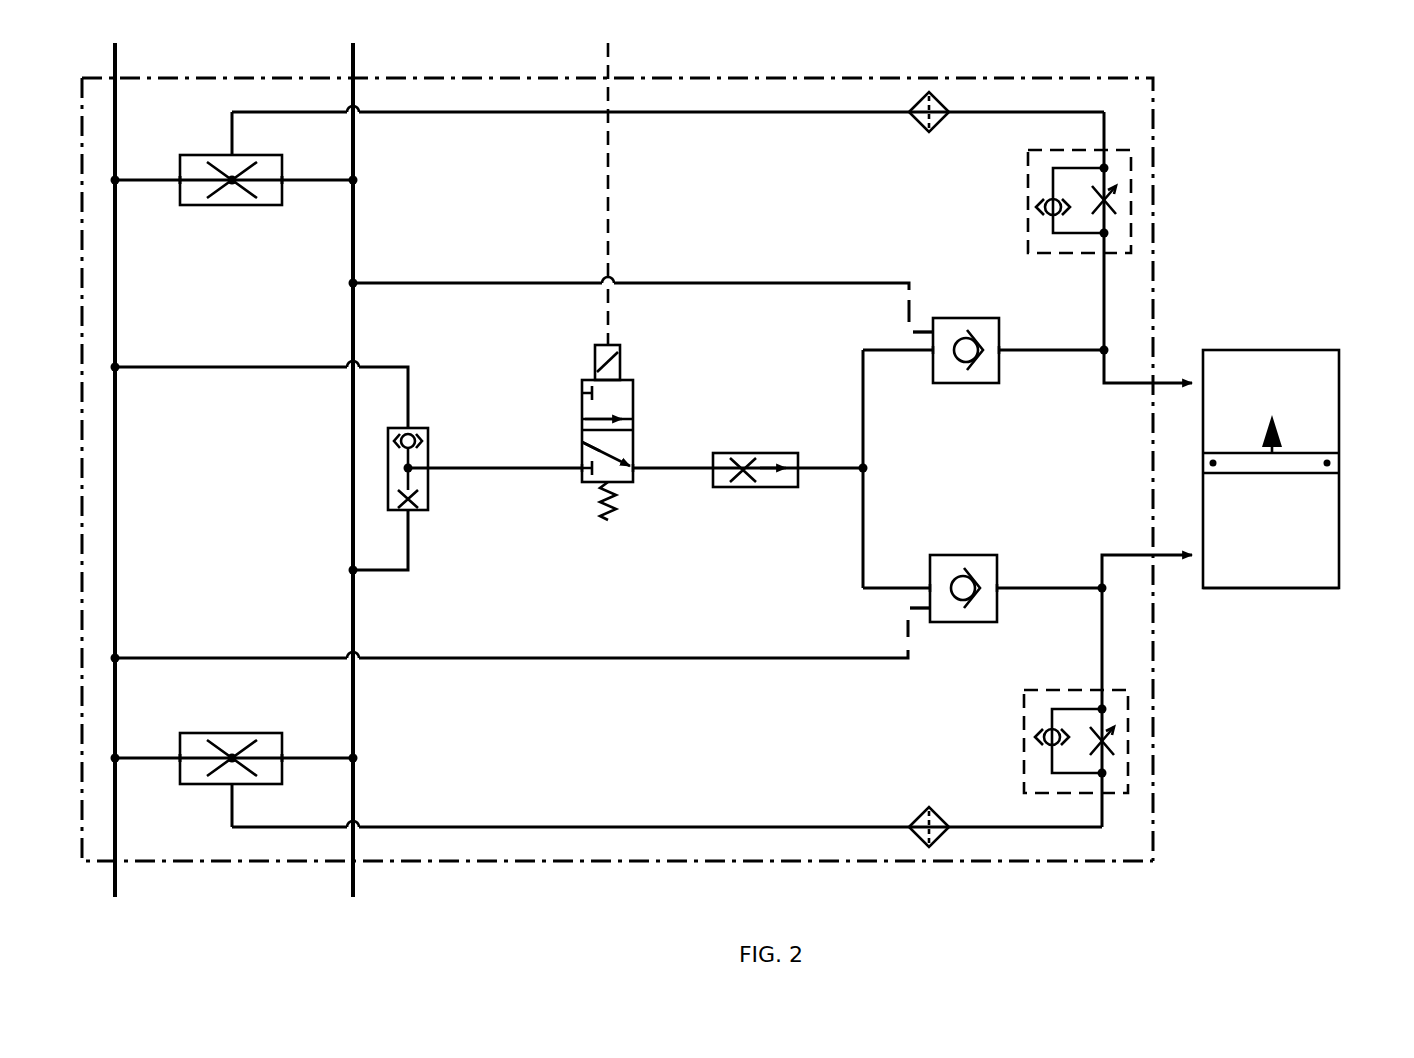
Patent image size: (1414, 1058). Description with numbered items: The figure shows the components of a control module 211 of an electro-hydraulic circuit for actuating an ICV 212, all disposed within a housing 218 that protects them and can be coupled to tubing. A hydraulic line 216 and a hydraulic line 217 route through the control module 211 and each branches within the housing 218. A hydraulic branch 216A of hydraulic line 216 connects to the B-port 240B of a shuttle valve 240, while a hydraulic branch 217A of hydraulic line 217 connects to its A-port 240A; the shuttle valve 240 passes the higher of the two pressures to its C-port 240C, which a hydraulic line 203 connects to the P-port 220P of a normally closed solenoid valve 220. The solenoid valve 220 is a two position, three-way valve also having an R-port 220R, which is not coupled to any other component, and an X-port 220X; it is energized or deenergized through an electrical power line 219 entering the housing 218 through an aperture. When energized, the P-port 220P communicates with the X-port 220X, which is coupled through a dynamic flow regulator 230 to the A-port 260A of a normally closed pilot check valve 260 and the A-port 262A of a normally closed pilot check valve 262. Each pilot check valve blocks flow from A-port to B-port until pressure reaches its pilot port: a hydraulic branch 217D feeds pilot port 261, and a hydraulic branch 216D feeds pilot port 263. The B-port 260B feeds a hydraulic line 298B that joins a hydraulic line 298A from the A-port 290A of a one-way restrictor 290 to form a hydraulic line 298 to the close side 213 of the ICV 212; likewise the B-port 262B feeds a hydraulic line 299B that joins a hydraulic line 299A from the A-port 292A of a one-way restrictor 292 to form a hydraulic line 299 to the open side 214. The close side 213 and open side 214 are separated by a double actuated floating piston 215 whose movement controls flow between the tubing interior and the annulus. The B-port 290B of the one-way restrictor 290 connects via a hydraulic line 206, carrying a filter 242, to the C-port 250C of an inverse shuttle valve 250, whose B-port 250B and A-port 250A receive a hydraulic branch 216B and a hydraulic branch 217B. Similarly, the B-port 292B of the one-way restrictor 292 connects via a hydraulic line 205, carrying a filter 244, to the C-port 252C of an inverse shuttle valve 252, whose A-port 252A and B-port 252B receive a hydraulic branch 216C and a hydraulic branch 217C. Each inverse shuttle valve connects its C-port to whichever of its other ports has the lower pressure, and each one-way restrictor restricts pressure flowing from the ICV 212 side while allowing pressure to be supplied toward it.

The hydraulic line 203 is at (500, 477).
The hydraulic line 205 is at (615, 825).
The hydraulic line 206 is at (512, 118).
The control module 211 is at (1162, 818).
The ICV 212 is at (1283, 340).
The close side 213 is at (1249, 409).
The open side 214 is at (1249, 544).
The double actuated floating piston 215 is at (1308, 462).
The hydraulic line 216 is at (120, 435).
The hydraulic branch 216A is at (220, 352).
The hydraulic branch 216B is at (148, 172).
The hydraulic branch 216C is at (150, 768).
The hydraulic branch 216D is at (610, 650).
The hydraulic line 217 is at (360, 702).
The hydraulic branch 217A is at (392, 578).
The hydraulic branch 217B is at (316, 174).
The hydraulic branch 217C is at (318, 766).
The hydraulic branch 217D is at (466, 274).
The housing 218 is at (1157, 138).
The electrical power line 219 is at (614, 218).
The normally closed solenoid valve 220 is at (640, 398).
The P-port 220P is at (579, 472).
The R-port 220R is at (578, 443).
The X-port 220X is at (638, 467).
The dynamic flow regulator 230 is at (782, 492).
The shuttle valve 240 is at (380, 458).
The A-port 240A is at (403, 515).
The B-port 240B is at (413, 428).
The C-port 240C is at (434, 472).
The filter 242 is at (925, 132).
The filter 244 is at (922, 805).
The inverse shuttle valve 250 is at (228, 208).
The A-port 250A is at (288, 185).
The B-port 250B is at (175, 184).
The C-port 250C is at (228, 152).
The inverse shuttle valve 252 is at (228, 728).
The A-port 252A is at (176, 754).
The B-port 252B is at (288, 754).
The C-port 252C is at (226, 788).
The normally closed pilot check valve 260 is at (953, 392).
The A-port 260A is at (925, 362).
The B-port 260B is at (1003, 360).
The pilot port 261 is at (926, 314).
The normally closed pilot check valve 262 is at (948, 545).
The A-port 262A is at (922, 578).
The B-port 262B is at (1002, 580).
The pilot port 263 is at (925, 626).
The one-way restrictor 290 is at (1020, 178).
The A-port 290A is at (1110, 240).
The B-port 290B is at (1099, 160).
The one-way restrictor 292 is at (1022, 770).
The A-port 292A is at (1108, 700).
The B-port 292B is at (1108, 780).
The hydraulic line 298 is at (1168, 375).
The hydraulic line 298A is at (1085, 278).
The hydraulic line 298B is at (1028, 350).
The hydraulic line 299 is at (1172, 560).
The hydraulic line 299A is at (1082, 660).
The hydraulic line 299B is at (1058, 606).